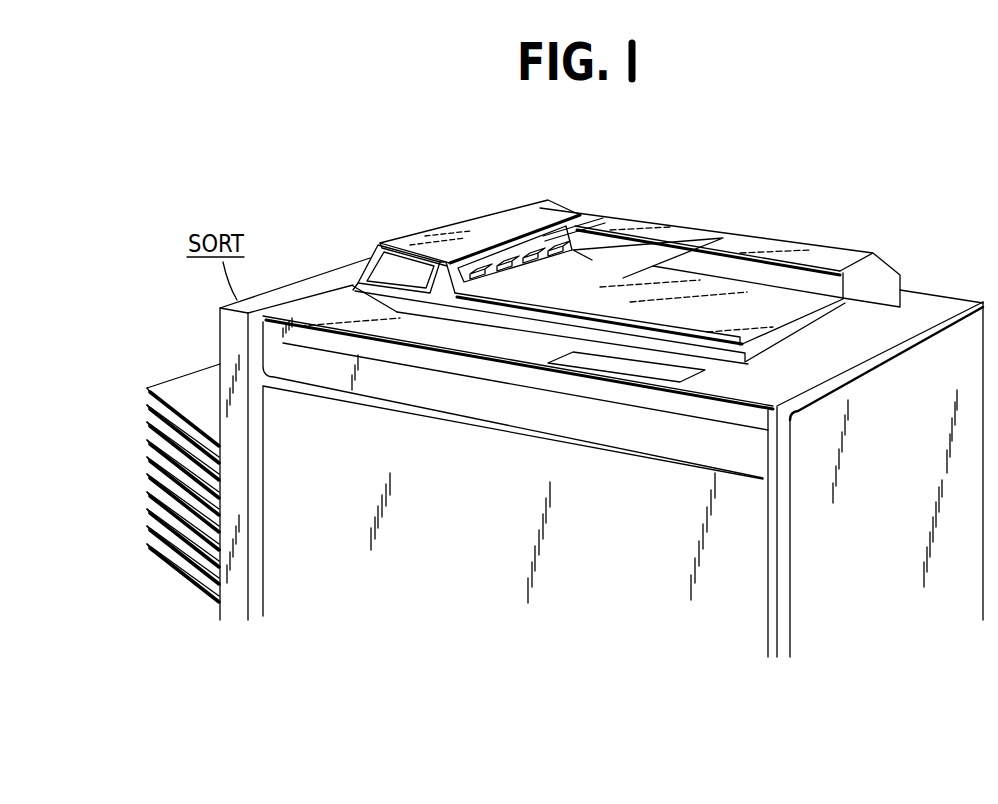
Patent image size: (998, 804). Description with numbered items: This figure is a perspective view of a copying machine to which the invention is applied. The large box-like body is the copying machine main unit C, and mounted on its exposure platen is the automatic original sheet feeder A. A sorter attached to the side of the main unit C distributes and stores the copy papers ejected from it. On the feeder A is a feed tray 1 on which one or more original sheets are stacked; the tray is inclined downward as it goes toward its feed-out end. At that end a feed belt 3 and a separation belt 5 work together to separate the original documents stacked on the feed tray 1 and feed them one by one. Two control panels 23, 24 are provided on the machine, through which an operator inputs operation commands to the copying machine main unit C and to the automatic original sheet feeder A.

The feed tray 1 is at (667, 252).
The feed belt 3 is at (550, 247).
The separation belt 5 is at (537, 250).
The control panel 23 is at (593, 368).
The control panel 24 is at (370, 262).
The automatic original sheet feeder A is at (431, 218).
The copying machine main unit C is at (797, 588).